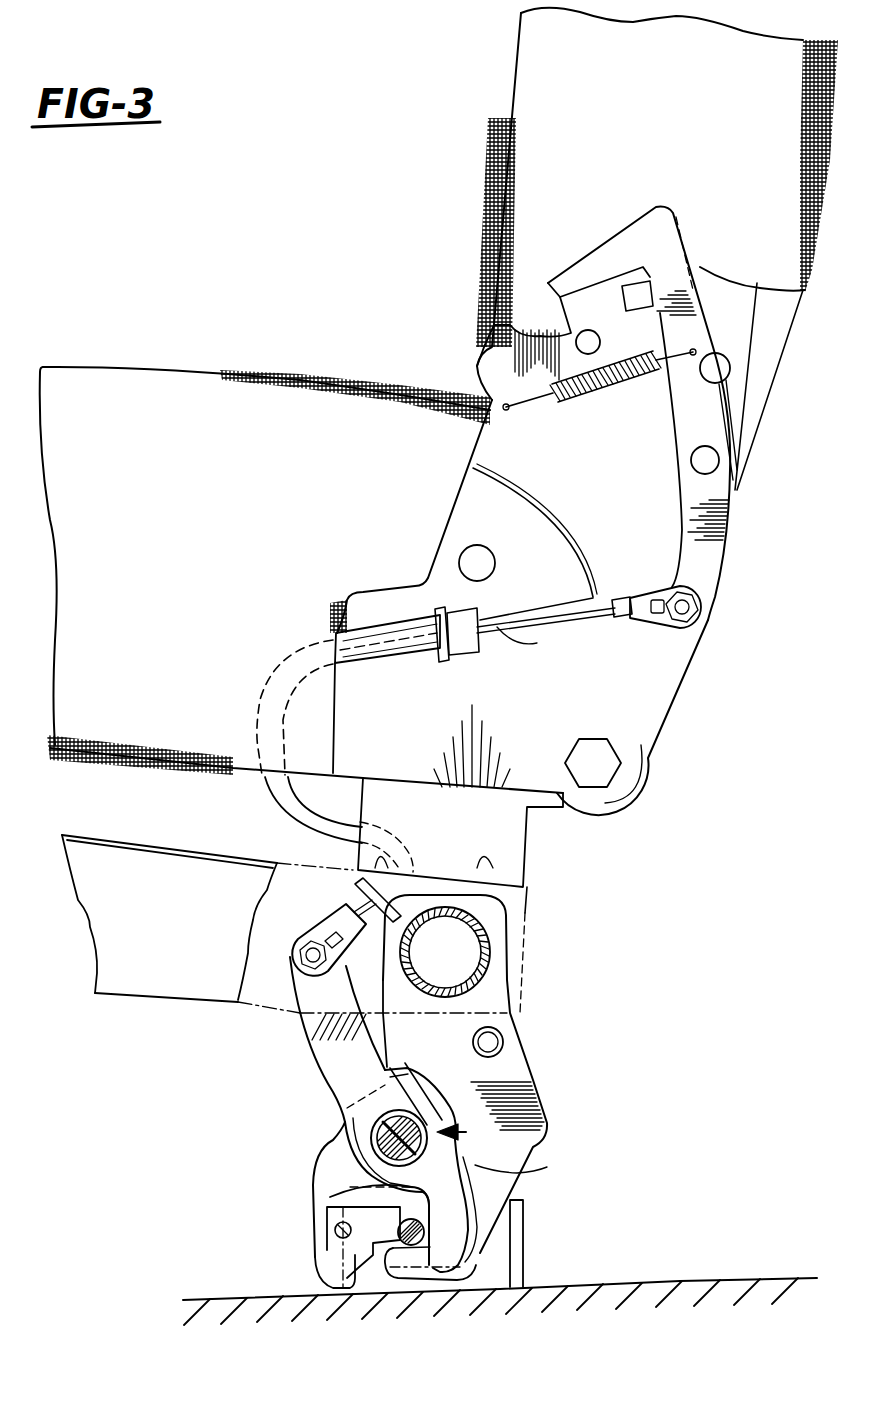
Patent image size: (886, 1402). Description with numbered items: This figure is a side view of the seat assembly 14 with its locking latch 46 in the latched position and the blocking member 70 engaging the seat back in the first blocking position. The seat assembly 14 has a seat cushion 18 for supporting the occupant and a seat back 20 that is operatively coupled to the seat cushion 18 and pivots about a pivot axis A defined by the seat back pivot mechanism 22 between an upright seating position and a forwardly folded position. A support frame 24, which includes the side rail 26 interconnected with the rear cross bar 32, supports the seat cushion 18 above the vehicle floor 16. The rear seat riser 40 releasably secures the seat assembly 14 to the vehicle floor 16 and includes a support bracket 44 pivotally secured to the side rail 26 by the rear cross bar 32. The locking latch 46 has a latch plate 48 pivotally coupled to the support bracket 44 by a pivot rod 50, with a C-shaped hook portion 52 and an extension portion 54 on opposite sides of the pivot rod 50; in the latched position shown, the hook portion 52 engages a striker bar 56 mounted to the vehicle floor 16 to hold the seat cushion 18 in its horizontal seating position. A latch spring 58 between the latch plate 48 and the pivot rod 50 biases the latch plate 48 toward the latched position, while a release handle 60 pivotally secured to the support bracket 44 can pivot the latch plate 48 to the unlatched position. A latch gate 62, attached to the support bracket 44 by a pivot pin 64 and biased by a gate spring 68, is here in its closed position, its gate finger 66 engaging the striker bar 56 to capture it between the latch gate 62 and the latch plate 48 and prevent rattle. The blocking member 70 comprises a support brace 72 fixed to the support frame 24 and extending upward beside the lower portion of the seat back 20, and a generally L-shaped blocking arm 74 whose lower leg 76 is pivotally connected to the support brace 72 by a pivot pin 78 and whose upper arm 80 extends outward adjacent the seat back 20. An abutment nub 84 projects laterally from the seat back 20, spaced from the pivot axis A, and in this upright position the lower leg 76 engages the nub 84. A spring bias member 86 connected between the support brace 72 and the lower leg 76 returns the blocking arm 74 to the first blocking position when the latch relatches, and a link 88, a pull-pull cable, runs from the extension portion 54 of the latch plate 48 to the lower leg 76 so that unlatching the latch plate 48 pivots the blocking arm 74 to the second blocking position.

The seat assembly 14 is at (338, 180).
The vehicle floor 16 is at (683, 1281).
The seat cushion 18 is at (172, 367).
The seat back 20 is at (515, 88).
The seat back pivot mechanism 22 is at (738, 300).
The support frame 24 is at (62, 835).
The side rail 26 is at (137, 985).
The rear cross bar 32 is at (520, 913).
The rear seat riser 40 is at (535, 1023).
The support bracket 44 is at (313, 1178).
The locking latch 46 is at (533, 1137).
The latch plate 48 is at (477, 1165).
The pivot rod 50 is at (345, 1112).
The hook portion 52 is at (476, 1280).
The extension portion 54 is at (300, 1020).
The striker bar 56 is at (425, 1232).
The latch spring 58 is at (398, 1069).
The release handle 60 is at (503, 1046).
The latch gate 62 is at (330, 1283).
The pivot pin 64 is at (335, 1229).
The gate finger 66 is at (327, 1210).
The gate spring 68 is at (330, 1197).
The blocking member 70 is at (618, 576).
The support brace 72 is at (668, 683).
The blocking arm 74 is at (712, 412).
The lower leg 76 is at (717, 557).
The pivot pin 78 is at (720, 464).
The upper arm 80 is at (610, 247).
The abutment nub 84 is at (724, 375).
The spring bias member 86 is at (613, 397).
The link 88 is at (268, 690).
The pivot axis A is at (576, 343).